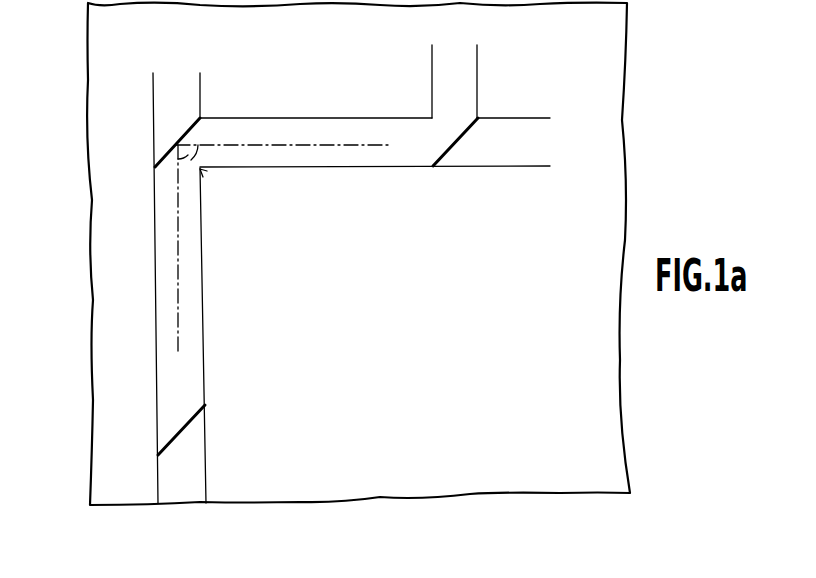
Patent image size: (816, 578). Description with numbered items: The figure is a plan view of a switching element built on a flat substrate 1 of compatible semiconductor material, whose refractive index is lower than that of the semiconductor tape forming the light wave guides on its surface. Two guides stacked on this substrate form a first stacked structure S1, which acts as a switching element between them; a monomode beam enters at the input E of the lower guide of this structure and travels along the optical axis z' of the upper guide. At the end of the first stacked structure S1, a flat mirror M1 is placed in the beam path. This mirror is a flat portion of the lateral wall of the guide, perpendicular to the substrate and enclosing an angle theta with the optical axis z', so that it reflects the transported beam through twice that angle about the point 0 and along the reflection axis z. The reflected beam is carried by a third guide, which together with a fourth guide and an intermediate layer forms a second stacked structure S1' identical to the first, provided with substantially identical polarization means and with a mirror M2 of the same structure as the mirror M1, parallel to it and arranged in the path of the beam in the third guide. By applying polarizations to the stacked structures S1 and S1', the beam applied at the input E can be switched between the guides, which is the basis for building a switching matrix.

The substrate 1 is at (595, 393).
The flat mirror M1 is at (179, 135).
The mirror M2 is at (467, 138).
The first stacked structure S1 is at (122, 249).
The second stacked structure S1' is at (284, 198).
The axis of reflection z is at (398, 152).
The optical axis z' is at (168, 347).
The origin 0 is at (168, 166).
The input E is at (184, 505).